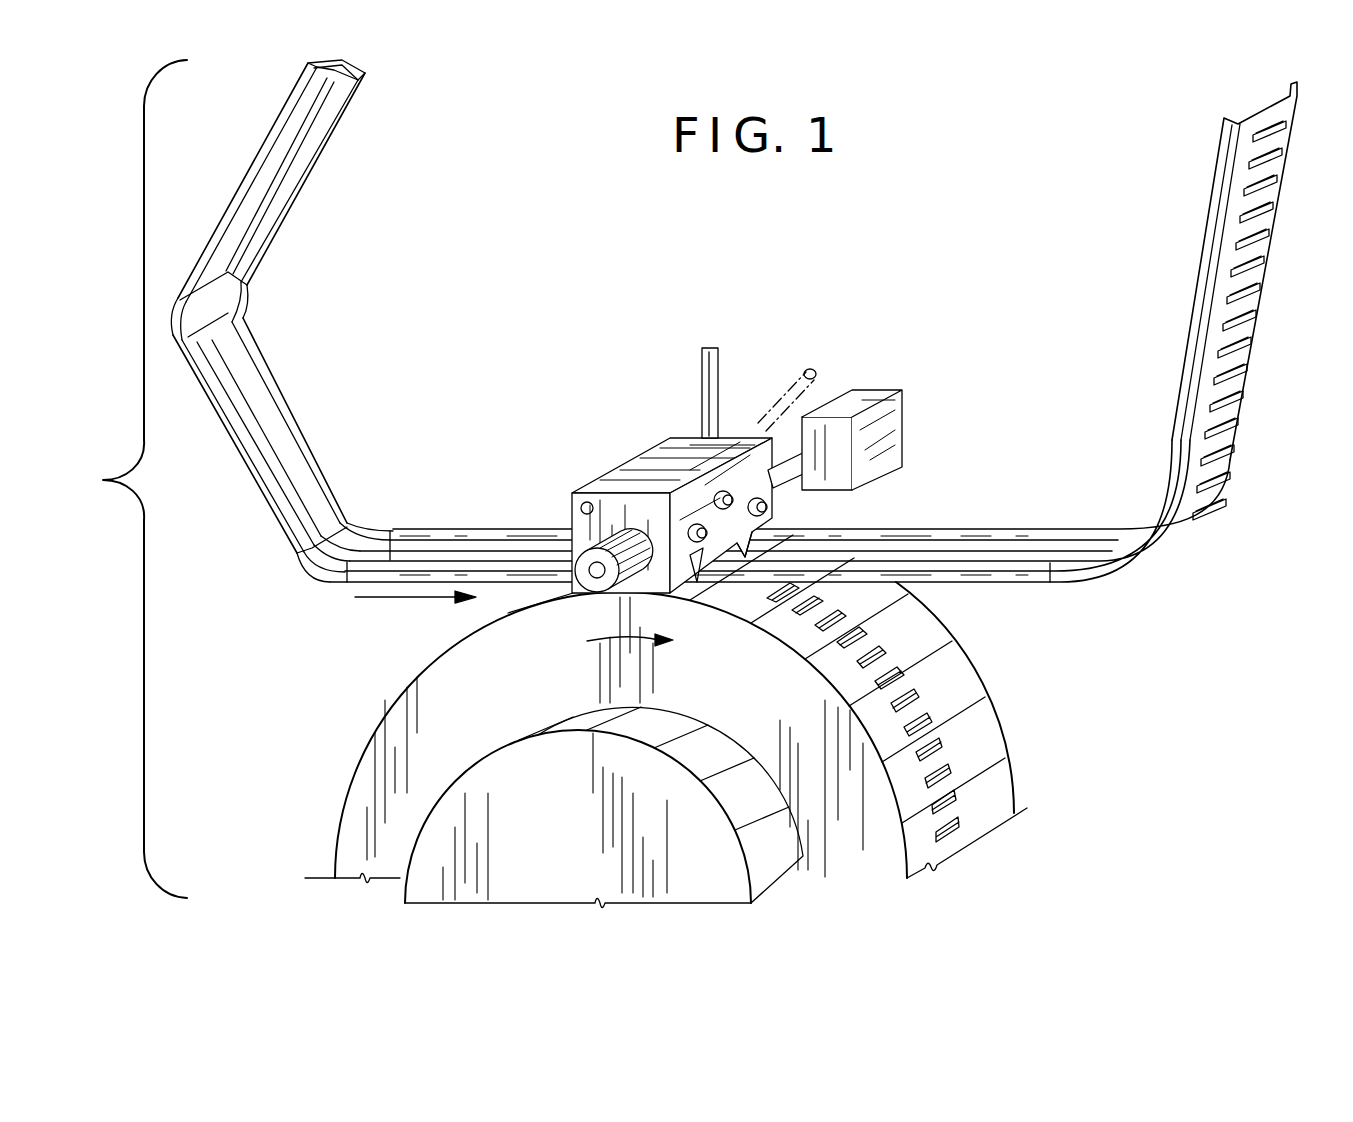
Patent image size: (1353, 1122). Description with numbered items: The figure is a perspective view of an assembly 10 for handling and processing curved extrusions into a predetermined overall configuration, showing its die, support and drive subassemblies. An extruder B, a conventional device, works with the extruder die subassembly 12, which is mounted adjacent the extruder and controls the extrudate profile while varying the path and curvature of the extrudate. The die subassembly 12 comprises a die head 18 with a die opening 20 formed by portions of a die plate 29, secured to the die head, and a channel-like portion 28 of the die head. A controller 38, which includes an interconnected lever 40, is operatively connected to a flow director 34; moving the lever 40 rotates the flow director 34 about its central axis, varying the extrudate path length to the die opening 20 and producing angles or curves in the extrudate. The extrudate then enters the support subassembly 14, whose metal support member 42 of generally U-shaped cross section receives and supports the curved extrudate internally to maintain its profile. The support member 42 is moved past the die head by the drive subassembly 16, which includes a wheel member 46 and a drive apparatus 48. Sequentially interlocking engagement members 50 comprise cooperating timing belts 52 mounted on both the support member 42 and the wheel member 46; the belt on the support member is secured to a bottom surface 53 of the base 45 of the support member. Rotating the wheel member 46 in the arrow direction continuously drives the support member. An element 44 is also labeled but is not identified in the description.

The assembly 10 is at (126, 479).
The extruder die subassembly 12 is at (570, 410).
The support subassembly 14 is at (300, 318).
The drive subassembly 16 is at (1092, 660).
The die head 18 is at (570, 523).
The die opening 20 is at (748, 542).
The channel-like portion 28 is at (700, 583).
The die plate 29 is at (742, 480).
The flow director 34 is at (822, 465).
The controller 38 is at (738, 335).
The lever 40 is at (700, 367).
The support member 42 is at (287, 220).
The channel flange 44 is at (307, 152).
The base 45 is at (327, 75).
The wheel member 46 is at (987, 747).
The drive apparatus 48 is at (450, 807).
The engagement members 50 is at (1060, 609).
The timing belts 52 is at (1229, 477).
The bottom surface 53 is at (1257, 295).
The extruder B is at (895, 436).